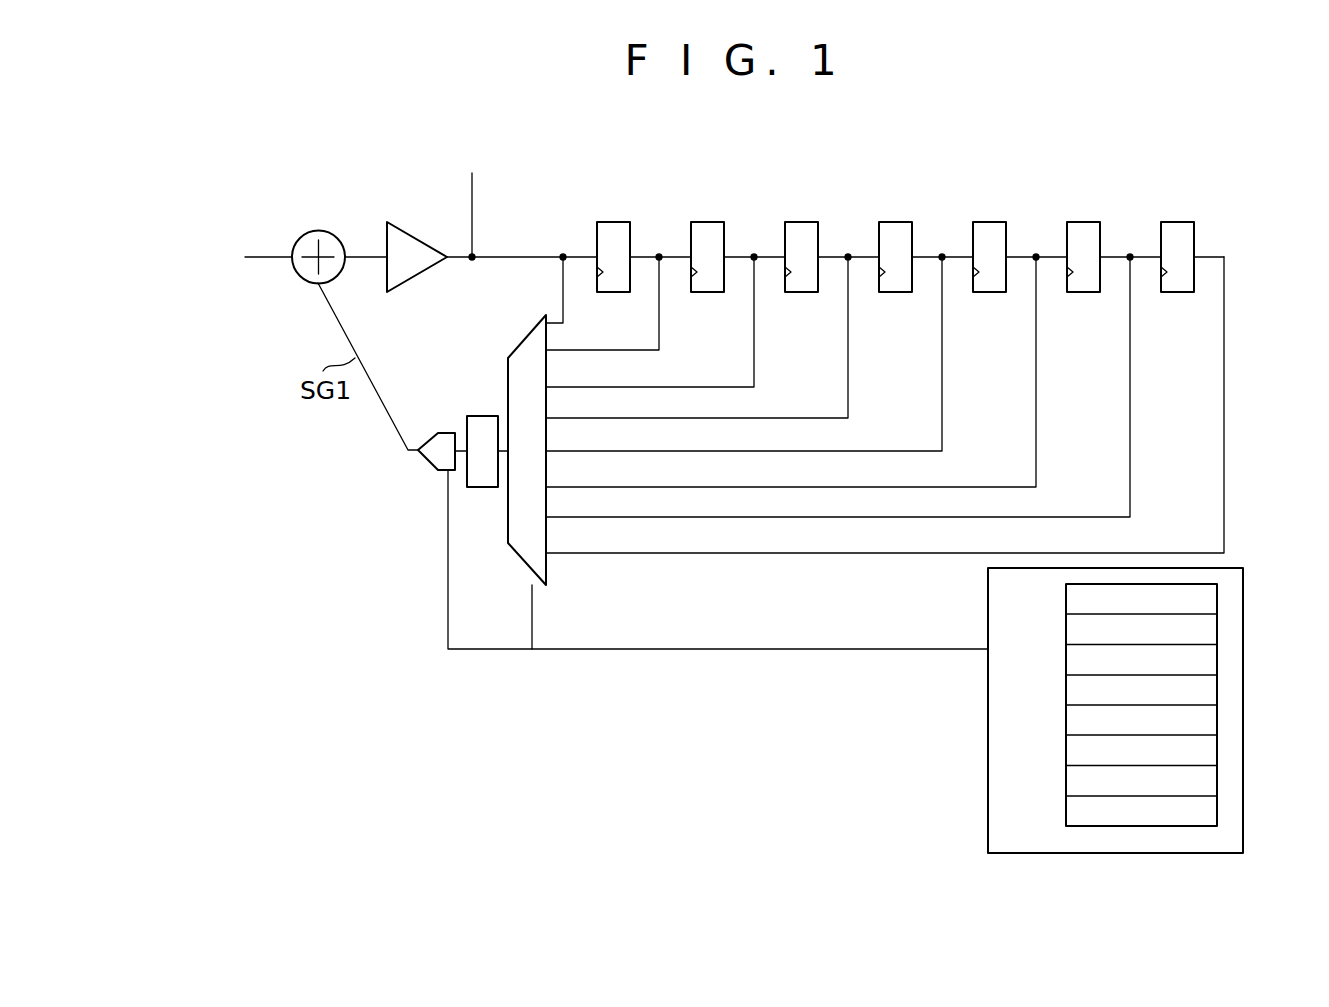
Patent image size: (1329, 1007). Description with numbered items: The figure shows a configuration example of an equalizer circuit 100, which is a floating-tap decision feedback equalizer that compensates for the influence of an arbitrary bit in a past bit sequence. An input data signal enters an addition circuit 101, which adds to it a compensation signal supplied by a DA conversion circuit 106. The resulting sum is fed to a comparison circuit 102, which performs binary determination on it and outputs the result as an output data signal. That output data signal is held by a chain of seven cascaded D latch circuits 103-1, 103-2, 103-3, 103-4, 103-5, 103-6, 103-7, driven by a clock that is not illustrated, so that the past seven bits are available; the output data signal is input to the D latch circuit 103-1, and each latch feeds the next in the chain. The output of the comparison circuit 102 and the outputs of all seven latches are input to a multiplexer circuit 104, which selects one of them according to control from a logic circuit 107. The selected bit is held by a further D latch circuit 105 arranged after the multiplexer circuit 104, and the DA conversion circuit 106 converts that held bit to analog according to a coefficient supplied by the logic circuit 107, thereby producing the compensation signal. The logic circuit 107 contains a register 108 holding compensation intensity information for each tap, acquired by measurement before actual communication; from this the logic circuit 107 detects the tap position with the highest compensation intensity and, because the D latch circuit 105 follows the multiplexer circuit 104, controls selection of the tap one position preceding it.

The equalizer circuit 100 is at (790, 146).
The addition circuit 101 is at (335, 229).
The comparison circuit 102 is at (412, 278).
The D latch circuit 103-1 is at (618, 221).
The D latch circuit 103-2 is at (712, 221).
The D latch circuit 103-3 is at (806, 221).
The D latch circuit 103-4 is at (900, 221).
The D latch circuit 103-5 is at (994, 221).
The D latch circuit 103-6 is at (1088, 221).
The D latch circuit 103-7 is at (1182, 221).
The multiplexer circuit 104 is at (547, 568).
The D latch circuit 105 is at (487, 416).
The DA conversion circuit 106 is at (428, 464).
The logic circuit 107 is at (988, 722).
The register 108 is at (1217, 600).